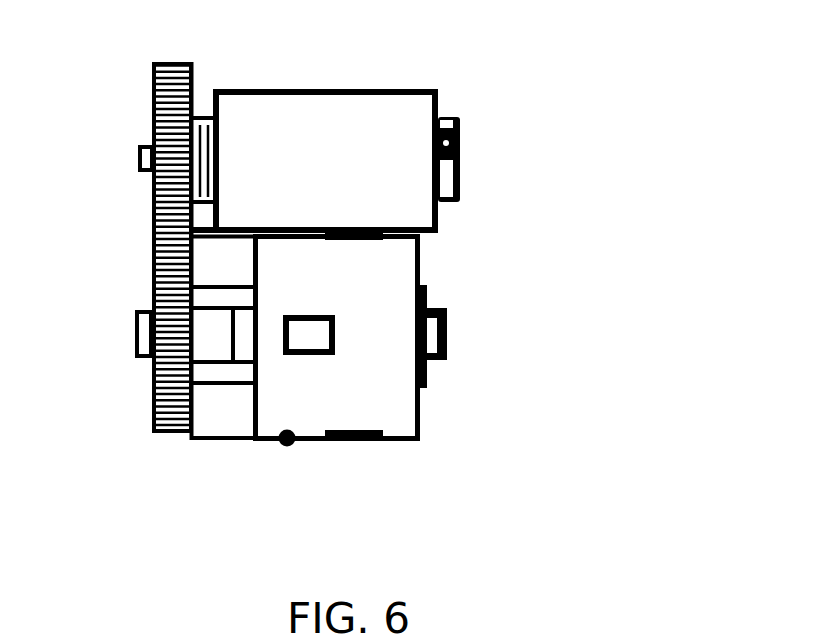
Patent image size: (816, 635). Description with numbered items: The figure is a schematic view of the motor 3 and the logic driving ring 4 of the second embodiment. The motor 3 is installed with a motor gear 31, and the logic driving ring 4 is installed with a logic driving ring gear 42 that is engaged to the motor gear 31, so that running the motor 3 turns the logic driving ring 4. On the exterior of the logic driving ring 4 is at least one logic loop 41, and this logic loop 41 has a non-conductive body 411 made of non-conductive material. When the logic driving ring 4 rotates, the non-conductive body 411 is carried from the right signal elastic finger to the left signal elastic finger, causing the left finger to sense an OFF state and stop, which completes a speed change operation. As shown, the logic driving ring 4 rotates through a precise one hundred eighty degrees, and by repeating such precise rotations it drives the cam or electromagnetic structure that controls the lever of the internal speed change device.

The motor 3 is at (325, 92).
The motor gear 31 is at (152, 92).
The logic driving ring 4 is at (430, 405).
The logic loop 41 is at (287, 438).
The non-conductive body 411 is at (325, 371).
The logic driving ring gear 42 is at (152, 403).